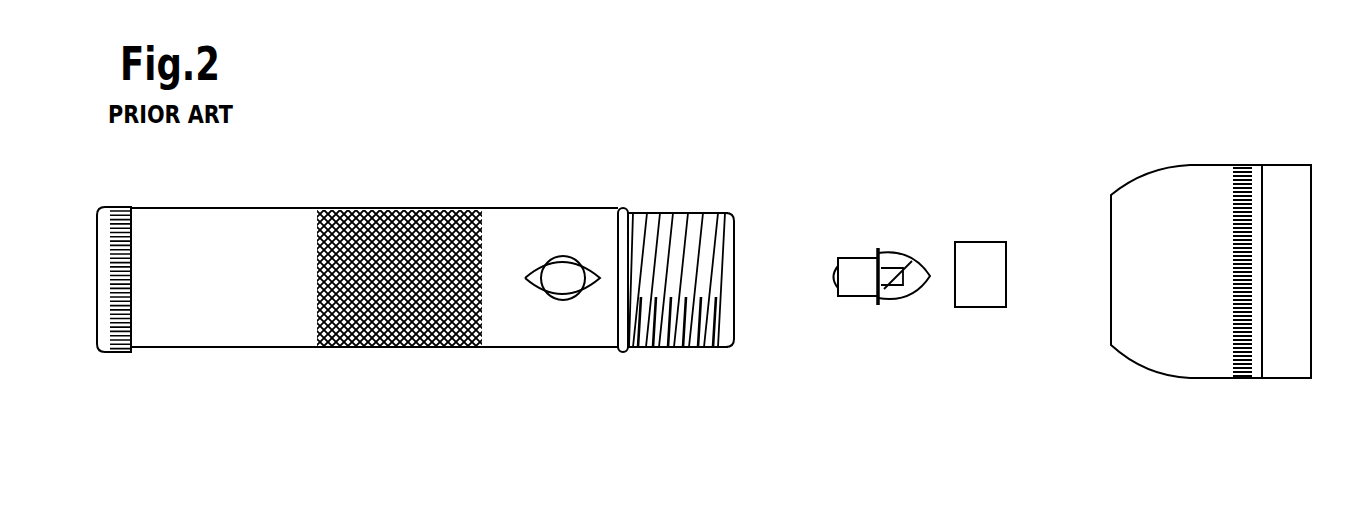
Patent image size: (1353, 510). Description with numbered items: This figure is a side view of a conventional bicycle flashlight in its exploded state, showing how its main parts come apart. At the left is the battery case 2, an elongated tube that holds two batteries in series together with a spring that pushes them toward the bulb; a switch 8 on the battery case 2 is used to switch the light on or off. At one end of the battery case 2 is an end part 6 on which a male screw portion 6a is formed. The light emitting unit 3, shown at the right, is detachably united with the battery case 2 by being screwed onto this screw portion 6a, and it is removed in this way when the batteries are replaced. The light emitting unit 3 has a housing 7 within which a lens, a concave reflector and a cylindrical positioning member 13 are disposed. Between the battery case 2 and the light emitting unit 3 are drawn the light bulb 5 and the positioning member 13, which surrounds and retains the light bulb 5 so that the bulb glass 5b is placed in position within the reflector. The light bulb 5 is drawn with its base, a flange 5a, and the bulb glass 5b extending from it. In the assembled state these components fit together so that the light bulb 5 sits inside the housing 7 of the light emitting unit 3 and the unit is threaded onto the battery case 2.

The battery case 2 is at (525, 210).
The light emitting unit 3 is at (1211, 210).
The light bulb 5 is at (875, 268).
The bulb flange 5a is at (885, 249).
The bulb glass 5b is at (900, 297).
The end part 6 is at (699, 244).
The screw portion 6a is at (665, 213).
The housing 7 is at (1206, 153).
The switch 8 is at (560, 290).
The positioning member 13 is at (990, 242).